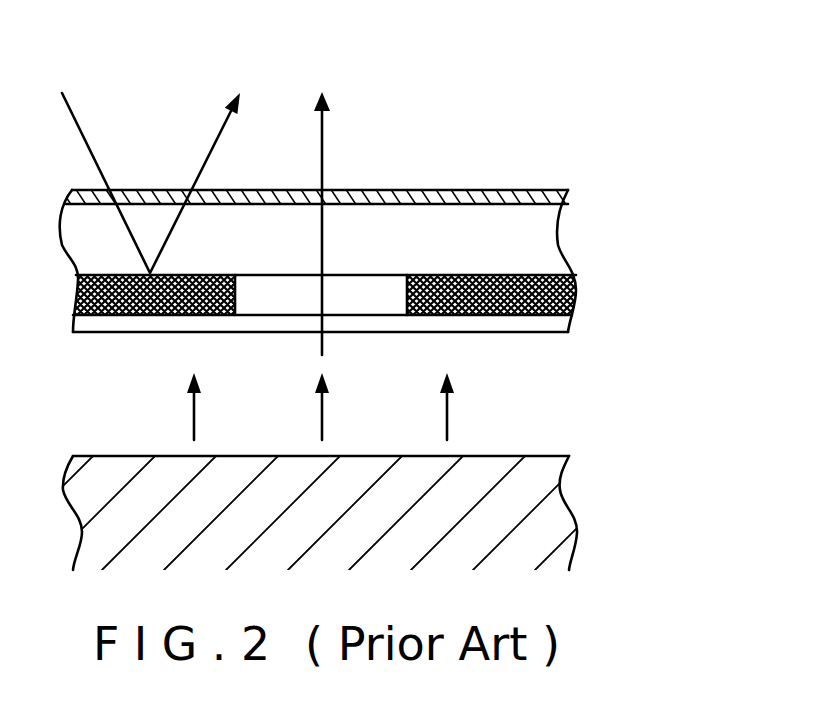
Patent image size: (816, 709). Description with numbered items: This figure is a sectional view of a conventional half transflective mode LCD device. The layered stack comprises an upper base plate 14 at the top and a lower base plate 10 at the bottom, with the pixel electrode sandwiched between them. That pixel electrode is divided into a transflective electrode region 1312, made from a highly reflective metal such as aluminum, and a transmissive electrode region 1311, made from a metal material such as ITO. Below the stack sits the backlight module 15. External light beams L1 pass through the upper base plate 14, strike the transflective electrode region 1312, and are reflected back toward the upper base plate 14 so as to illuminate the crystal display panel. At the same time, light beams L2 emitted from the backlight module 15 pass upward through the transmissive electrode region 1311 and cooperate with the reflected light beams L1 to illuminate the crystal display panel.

The upper base plate 14 is at (568, 192).
The transflective electrode region 1312 is at (575, 285).
The transmissive electrode region 1311 is at (380, 290).
The lower base plate 10 is at (557, 325).
The backlight module 15 is at (552, 503).
The external light beams L1 is at (82, 130).
The light beams emitted from the backlight module L2 is at (193, 420).